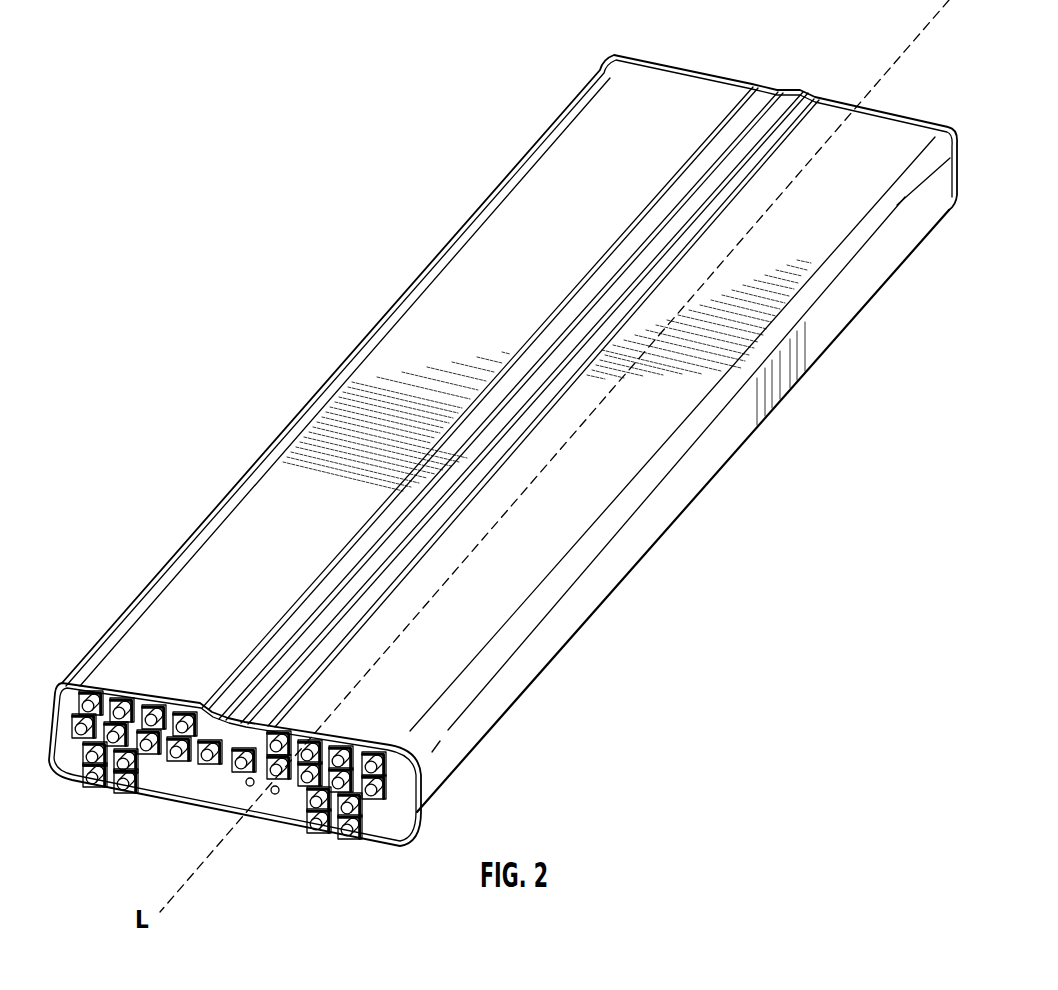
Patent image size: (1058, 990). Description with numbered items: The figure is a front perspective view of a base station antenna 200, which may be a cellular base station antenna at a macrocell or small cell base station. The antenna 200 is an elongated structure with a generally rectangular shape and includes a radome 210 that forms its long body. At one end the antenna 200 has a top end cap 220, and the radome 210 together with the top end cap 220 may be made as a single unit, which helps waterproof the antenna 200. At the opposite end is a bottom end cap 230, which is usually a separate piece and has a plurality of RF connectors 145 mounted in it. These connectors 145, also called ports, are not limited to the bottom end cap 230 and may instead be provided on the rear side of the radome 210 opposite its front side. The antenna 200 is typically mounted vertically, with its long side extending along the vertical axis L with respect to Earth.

The base station antenna 200 is at (342, 268).
The radome 210 is at (855, 293).
The top end cap 220 is at (738, 81).
The bottom end cap 230 is at (67, 706).
The RF connectors 145 is at (120, 792).